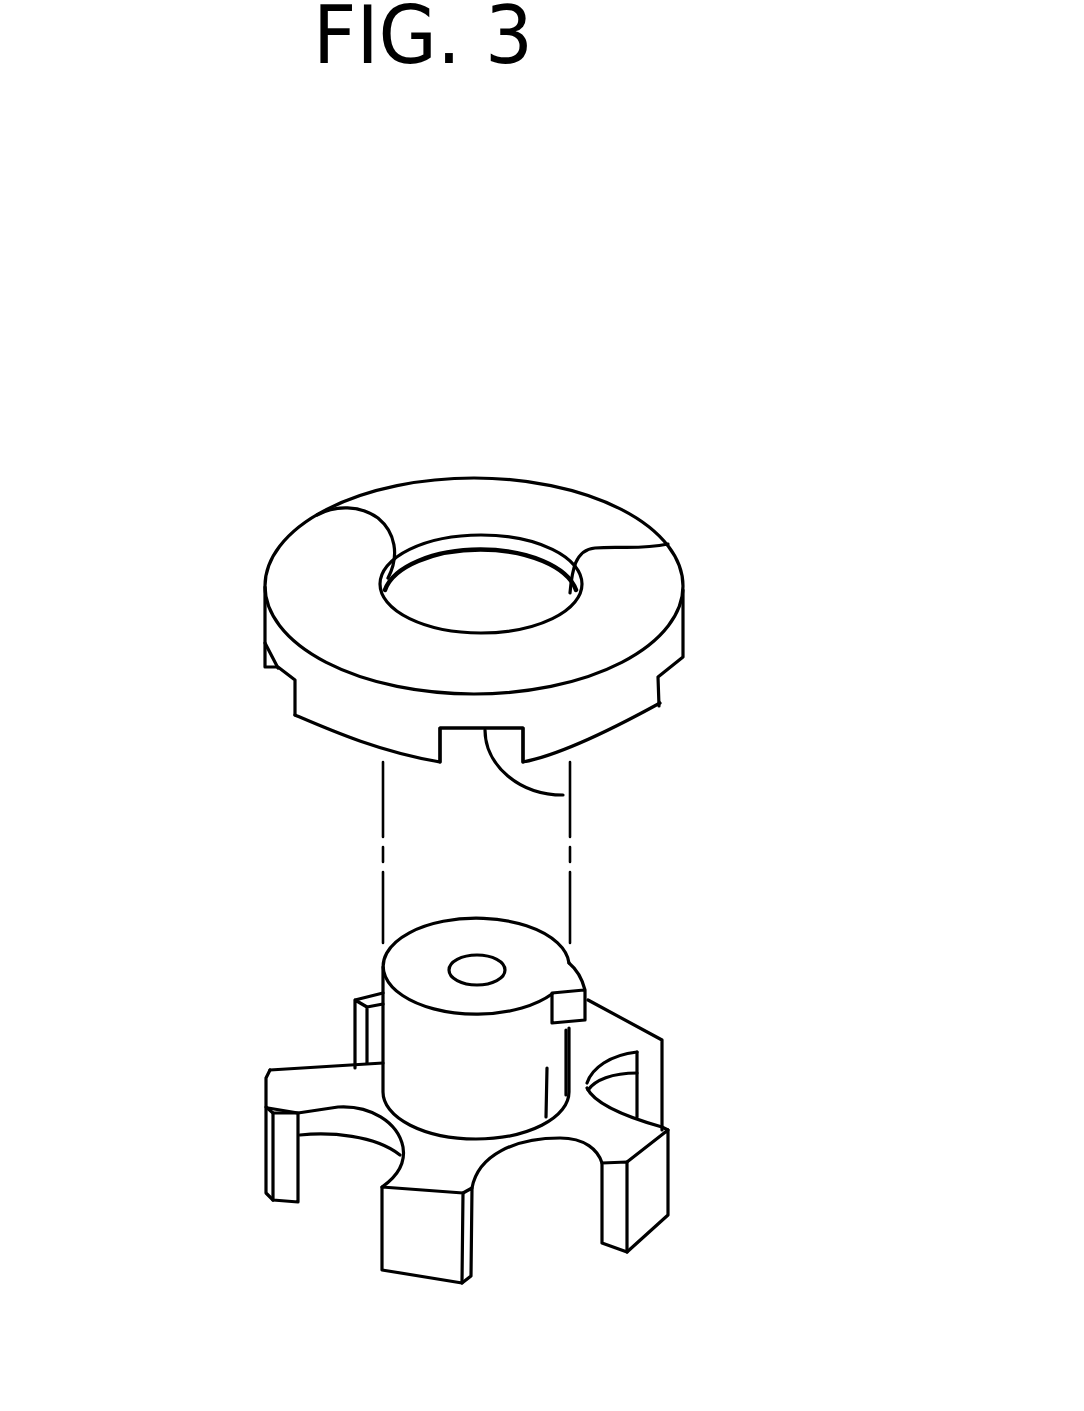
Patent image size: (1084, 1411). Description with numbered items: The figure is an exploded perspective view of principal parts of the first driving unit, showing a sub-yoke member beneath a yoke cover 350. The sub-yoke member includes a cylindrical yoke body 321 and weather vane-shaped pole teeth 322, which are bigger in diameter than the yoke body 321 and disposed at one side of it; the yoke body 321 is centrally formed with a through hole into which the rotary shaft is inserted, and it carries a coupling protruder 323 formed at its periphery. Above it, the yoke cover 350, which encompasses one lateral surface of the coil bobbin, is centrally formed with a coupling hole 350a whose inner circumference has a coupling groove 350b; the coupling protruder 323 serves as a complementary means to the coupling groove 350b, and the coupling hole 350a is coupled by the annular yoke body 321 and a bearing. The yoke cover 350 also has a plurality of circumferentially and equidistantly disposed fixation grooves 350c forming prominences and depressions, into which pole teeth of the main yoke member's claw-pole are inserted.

The yoke cover 350 is at (680, 570).
The coupling hole 350a is at (320, 515).
The coupling groove 350b is at (660, 540).
The fixation groove 350c is at (563, 795).
The yoke body 321 is at (413, 1042).
The pole tooth 322 is at (413, 1233).
The coupling protruder 323 is at (587, 977).